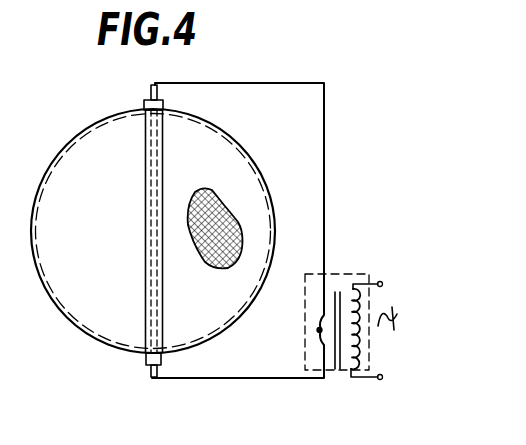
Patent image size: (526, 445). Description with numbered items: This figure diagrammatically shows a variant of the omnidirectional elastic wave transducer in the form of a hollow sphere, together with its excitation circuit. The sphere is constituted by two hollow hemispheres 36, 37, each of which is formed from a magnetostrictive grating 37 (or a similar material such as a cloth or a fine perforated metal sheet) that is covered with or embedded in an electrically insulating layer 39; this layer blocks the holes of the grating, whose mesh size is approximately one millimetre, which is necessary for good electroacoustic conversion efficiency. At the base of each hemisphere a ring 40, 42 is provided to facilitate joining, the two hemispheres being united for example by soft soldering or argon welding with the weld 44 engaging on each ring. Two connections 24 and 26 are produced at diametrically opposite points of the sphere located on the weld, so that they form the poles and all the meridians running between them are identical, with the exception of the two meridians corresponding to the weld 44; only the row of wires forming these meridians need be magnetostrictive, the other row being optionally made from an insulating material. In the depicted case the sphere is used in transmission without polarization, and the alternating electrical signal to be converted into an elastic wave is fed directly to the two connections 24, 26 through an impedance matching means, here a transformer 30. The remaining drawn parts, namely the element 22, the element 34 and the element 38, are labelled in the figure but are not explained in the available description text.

The chamber 22 is at (60, 150).
The upper shaft end 24 is at (149, 96).
The lower shaft end 26 is at (152, 370).
The power supply 30 is at (292, 350).
The chamber wall 34 is at (55, 221).
The lower wall portion 36 is at (60, 307).
The electrode lead 37 is at (226, 212).
The wall portion 38 is at (247, 306).
The electrode lead 39 is at (242, 245).
The bearing 40 is at (147, 359).
The seal 42 is at (160, 360).
The shaft 44 is at (152, 272).